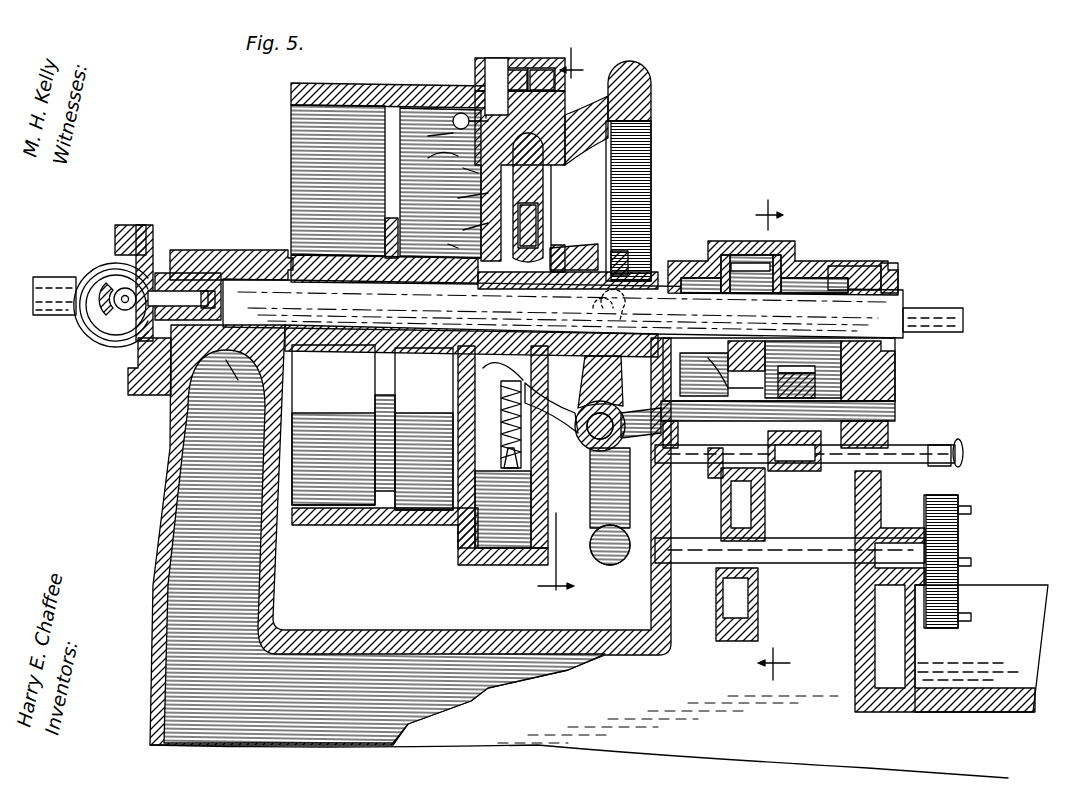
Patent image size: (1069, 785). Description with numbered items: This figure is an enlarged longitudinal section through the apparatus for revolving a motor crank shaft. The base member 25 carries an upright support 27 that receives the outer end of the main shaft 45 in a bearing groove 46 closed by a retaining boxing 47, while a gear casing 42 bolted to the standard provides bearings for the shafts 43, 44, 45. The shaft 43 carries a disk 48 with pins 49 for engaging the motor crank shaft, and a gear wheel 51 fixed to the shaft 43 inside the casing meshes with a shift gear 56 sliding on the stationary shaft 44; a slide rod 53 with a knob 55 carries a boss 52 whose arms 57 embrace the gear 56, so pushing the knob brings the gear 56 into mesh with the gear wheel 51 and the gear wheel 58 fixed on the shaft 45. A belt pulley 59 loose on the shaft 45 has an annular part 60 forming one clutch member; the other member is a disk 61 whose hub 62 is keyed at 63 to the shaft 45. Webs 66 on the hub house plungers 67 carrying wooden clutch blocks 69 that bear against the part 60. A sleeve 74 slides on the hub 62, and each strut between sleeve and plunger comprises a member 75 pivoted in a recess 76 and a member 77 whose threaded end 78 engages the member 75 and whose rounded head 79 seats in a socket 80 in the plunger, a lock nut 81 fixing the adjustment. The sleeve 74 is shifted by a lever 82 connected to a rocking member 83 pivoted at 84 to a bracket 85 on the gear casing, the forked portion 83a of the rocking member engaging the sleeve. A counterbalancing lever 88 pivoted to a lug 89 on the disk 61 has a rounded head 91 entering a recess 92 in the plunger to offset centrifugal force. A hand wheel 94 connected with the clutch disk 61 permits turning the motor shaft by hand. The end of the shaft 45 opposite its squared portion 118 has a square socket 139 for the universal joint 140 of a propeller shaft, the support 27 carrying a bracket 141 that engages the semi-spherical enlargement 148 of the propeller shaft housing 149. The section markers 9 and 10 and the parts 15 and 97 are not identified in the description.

The section line 9 is at (560, 333).
The section line 10 is at (781, 442).
The bore in standard 15 is at (233, 347).
The base member 25 is at (1020, 722).
The upright support 27 is at (163, 402).
The gear casing 42 is at (868, 262).
The shaft 43 is at (798, 545).
The stationary shaft 44 is at (882, 405).
The shaft 45 is at (590, 125).
The bearing groove 46 is at (787, 302).
The retaining boxing 47 is at (205, 246).
The disk 48 is at (955, 528).
The pins 49 is at (962, 607).
The gear wheel 51 is at (745, 612).
The boss 52 is at (790, 455).
The slide rod 53 is at (703, 470).
The knob 55 is at (948, 432).
The shift gear 56 is at (785, 366).
The arms 57 is at (705, 360).
The gear wheel 58 is at (735, 250).
The belt pulley 59 is at (405, 515).
The annular part 60 is at (495, 557).
The disk 61 is at (458, 200).
The hub 62 is at (470, 250).
The key 63 is at (452, 241).
The web 66 is at (530, 150).
The plunger 67 is at (512, 60).
The wooden clutch block 69 is at (540, 58).
The sleeve 74 is at (565, 256).
The strut member 75 is at (530, 215).
The recess 76 is at (545, 306).
The strut member 77 is at (480, 176).
The threaded end 78 is at (520, 200).
The rounded head 79 is at (480, 150).
The socket 80 is at (452, 142).
The lock nut 81 is at (537, 196).
The lever 82 is at (588, 298).
The rocking member 83 is at (582, 440).
The forked portion 83a is at (615, 302).
The pivot 84 is at (606, 442).
The bracket 85 is at (642, 408).
The lever 88 is at (447, 107).
The lug 89 is at (439, 131).
The rounded head 91 is at (476, 95).
The recess 92 is at (492, 52).
The hand wheel 94 is at (623, 56).
The cylinder 97 is at (608, 258).
The squared portion 118 is at (925, 300).
The square socket 139 is at (160, 285).
The universal joint 140 is at (100, 312).
The bracket 141 is at (118, 362).
The semi-spherical enlargement 148 is at (95, 255).
The propeller shaft housing 149 is at (38, 270).